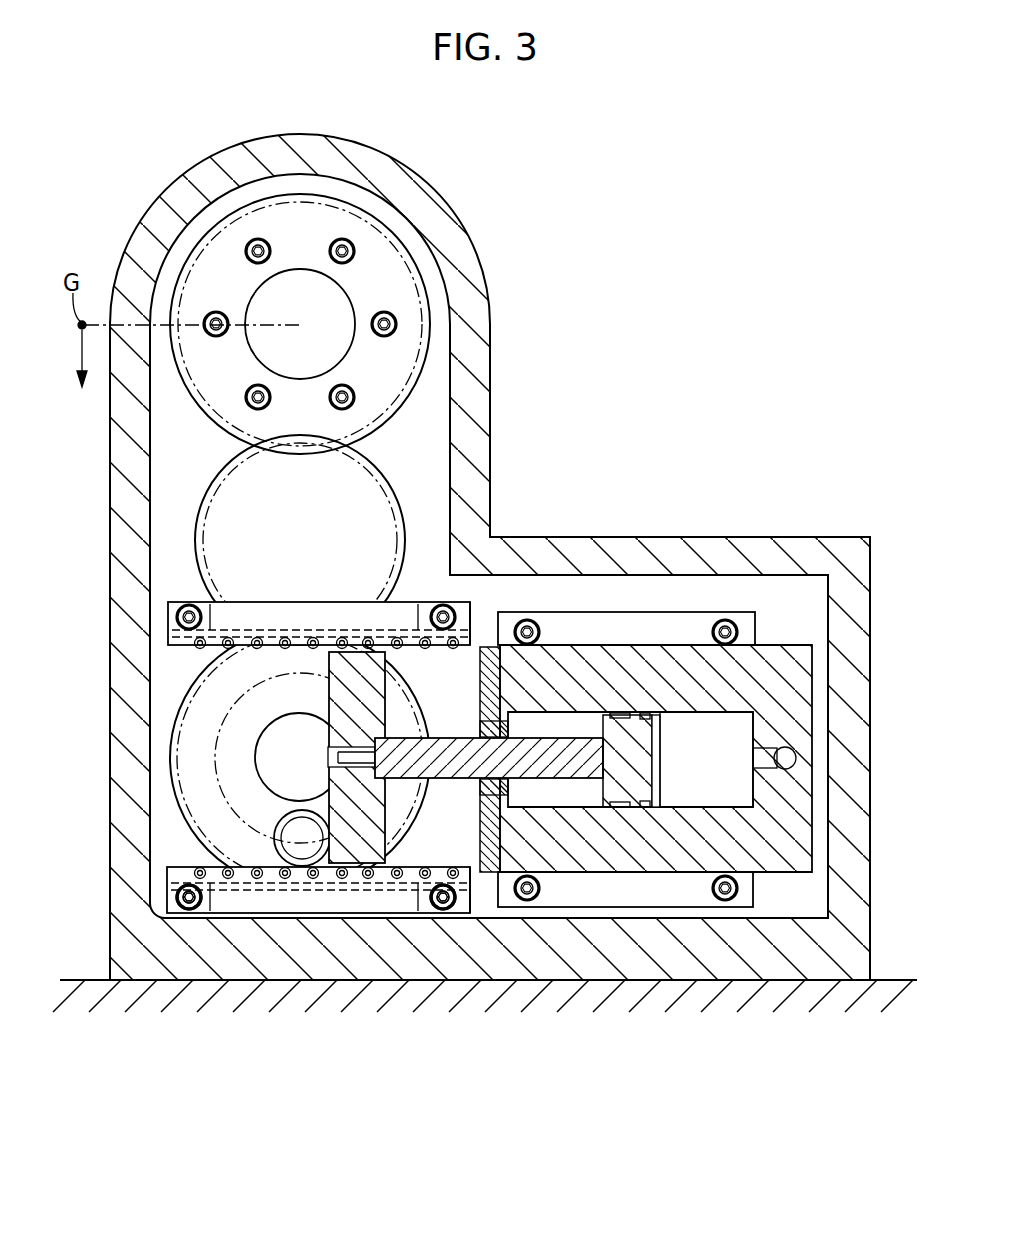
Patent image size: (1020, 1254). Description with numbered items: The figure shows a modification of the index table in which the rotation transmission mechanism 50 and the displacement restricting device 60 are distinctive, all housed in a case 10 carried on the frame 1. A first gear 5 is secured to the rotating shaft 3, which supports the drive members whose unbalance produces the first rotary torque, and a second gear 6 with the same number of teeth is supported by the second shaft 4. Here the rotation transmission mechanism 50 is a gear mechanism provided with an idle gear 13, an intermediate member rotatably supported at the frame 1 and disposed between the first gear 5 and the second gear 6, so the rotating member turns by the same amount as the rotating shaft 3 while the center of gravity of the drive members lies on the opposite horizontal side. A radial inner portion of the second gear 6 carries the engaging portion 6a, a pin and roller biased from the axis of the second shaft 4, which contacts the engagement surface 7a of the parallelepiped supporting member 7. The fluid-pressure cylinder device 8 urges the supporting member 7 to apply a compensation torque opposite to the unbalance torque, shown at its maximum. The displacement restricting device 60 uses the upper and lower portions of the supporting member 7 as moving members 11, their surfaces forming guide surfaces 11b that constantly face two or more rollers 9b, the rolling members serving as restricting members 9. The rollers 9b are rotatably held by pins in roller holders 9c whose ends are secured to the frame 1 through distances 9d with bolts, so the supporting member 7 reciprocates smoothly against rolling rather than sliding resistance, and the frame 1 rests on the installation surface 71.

The frame 1 is at (787, 583).
The rotating shaft 3 is at (255, 276).
The second shaft 4 is at (240, 747).
The first gear 5 is at (233, 418).
The second gear 6 is at (170, 600).
The engaging portion 6a is at (274, 838).
The supporting member 7 is at (250, 712).
The engagement surface 7a is at (290, 714).
The fluid-pressure cylinder device 8 is at (648, 635).
The restricting members 9 is at (480, 595).
The rollers 9b is at (462, 655).
The roller holders 9c is at (357, 903).
The distances 9d is at (190, 905).
The case 10 is at (484, 268).
The moving members 11 is at (288, 656).
The guide surfaces 11b is at (192, 625).
The idle gear 13 is at (207, 518).
The rotation transmission mechanism 50 is at (236, 419).
The displacement restricting device 60 is at (281, 1050).
The installation surface 71 is at (840, 998).